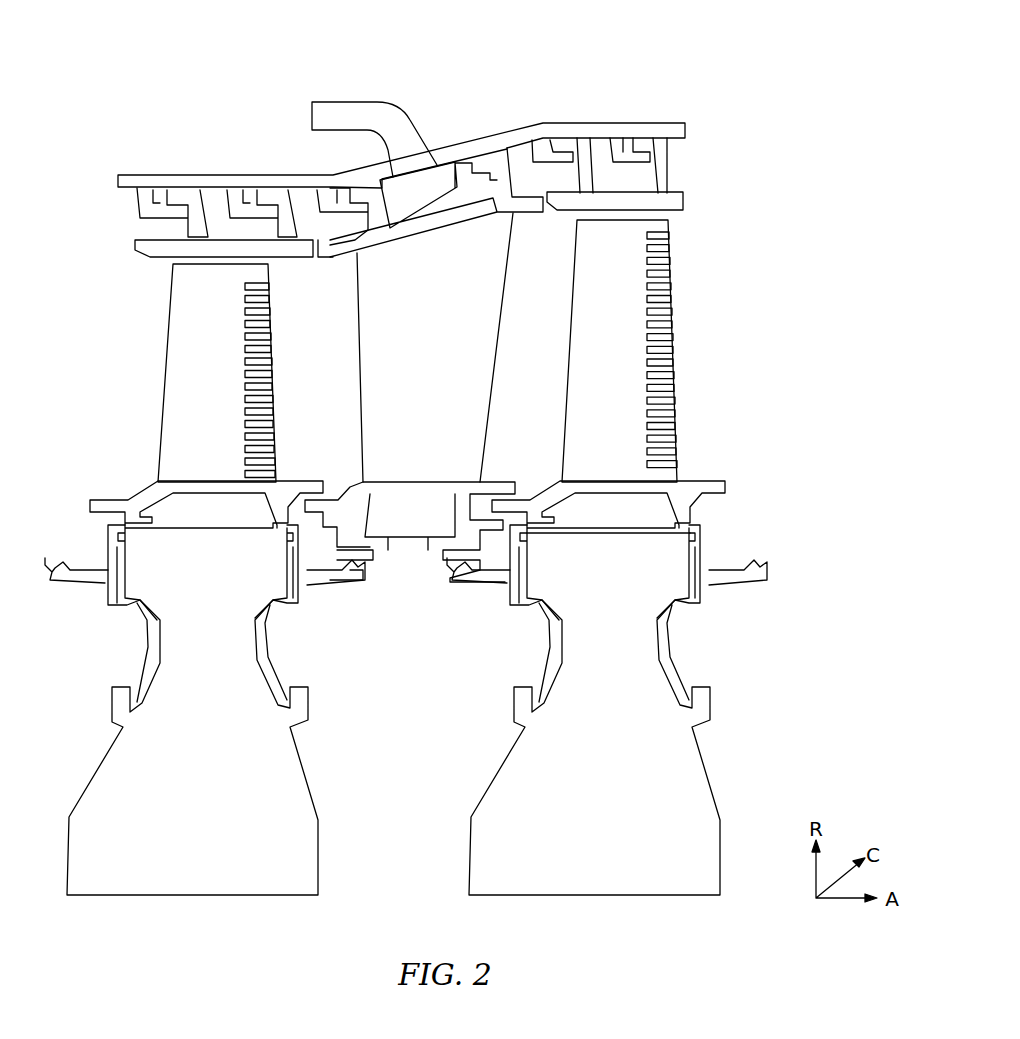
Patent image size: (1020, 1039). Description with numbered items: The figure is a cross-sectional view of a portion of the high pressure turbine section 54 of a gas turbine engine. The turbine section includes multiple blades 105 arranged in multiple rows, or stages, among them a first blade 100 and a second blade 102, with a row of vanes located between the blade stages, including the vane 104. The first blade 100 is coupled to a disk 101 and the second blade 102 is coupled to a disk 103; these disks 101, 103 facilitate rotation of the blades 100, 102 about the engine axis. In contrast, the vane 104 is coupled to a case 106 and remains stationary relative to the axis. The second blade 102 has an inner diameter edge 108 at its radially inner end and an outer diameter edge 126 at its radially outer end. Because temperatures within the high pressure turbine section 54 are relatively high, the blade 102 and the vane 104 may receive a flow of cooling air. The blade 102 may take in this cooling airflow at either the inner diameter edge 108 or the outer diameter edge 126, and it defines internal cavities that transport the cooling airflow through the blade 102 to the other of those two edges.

The high pressure turbine section 54 is at (705, 82).
The first blade 100 is at (165, 355).
The disk 101 is at (300, 808).
The second blade 102 is at (632, 292).
The disk 103 is at (700, 845).
The vane 104 is at (367, 385).
The blades 105 is at (136, 392).
The case 106 is at (500, 127).
The inner diameter edge 108 is at (612, 532).
The outer diameter edge 126 is at (637, 218).